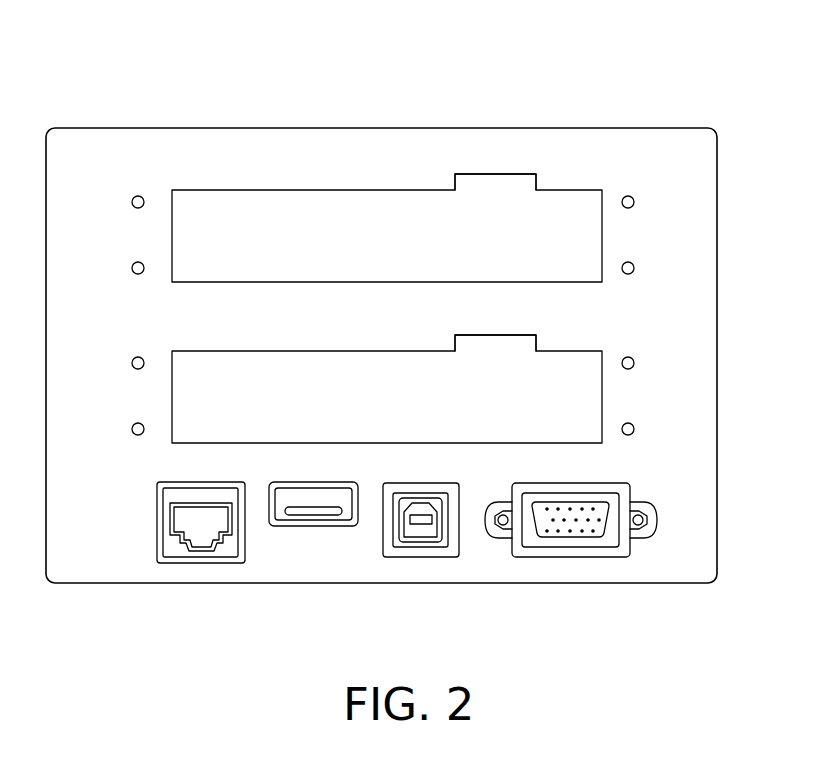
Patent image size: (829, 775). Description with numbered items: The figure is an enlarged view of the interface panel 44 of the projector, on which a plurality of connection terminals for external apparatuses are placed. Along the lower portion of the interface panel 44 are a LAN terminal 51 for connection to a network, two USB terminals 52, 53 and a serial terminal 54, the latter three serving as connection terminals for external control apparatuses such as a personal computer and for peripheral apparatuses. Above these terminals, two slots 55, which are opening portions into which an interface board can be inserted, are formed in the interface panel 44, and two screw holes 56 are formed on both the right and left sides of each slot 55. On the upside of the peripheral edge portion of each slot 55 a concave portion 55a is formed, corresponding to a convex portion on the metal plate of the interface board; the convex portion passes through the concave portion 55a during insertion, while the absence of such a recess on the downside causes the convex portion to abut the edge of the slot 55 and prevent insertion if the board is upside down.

The interface panel 44 is at (714, 93).
The LAN terminal 51 is at (203, 563).
The USB terminal 52 is at (318, 526).
The USB terminal 53 is at (423, 547).
The RS-232C terminal 54 is at (572, 547).
The slot 55 is at (250, 191).
The concave portion 55a is at (471, 179).
The screw hole 56 is at (131, 202).